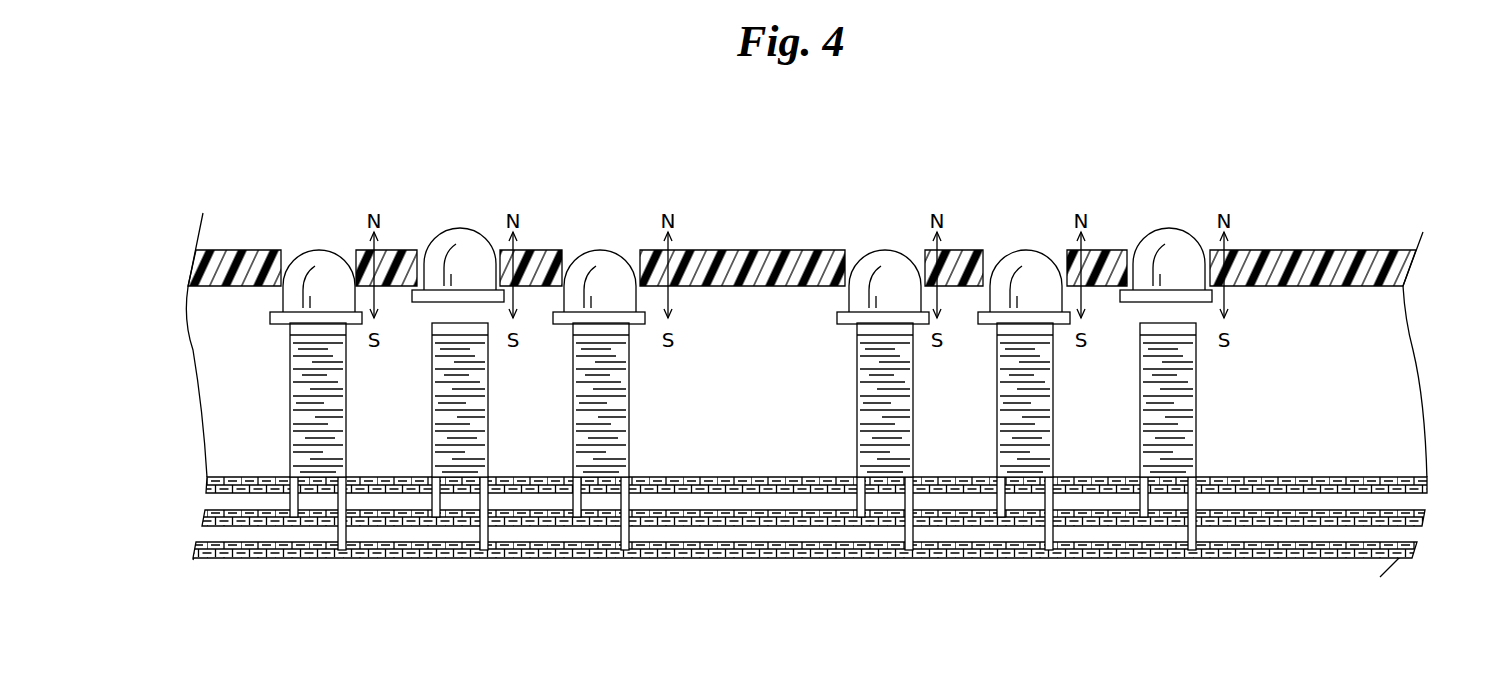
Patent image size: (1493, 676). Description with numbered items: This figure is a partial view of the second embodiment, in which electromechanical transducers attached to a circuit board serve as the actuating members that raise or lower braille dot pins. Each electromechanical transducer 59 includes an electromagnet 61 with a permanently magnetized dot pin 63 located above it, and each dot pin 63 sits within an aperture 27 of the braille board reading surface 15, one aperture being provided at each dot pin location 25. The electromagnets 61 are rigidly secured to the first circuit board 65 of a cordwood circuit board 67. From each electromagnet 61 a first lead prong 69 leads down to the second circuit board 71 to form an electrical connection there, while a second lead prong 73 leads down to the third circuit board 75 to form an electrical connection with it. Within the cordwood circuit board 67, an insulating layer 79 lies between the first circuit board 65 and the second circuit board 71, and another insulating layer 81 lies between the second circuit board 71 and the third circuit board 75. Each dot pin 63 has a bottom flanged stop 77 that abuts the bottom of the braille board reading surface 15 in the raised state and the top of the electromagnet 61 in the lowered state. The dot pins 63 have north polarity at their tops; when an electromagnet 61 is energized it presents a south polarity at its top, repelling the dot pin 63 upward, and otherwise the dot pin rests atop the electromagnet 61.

The braille board reading surface 15 is at (802, 248).
The dot pin location 25 is at (603, 232).
The aperture 27 is at (633, 250).
The electromechanical transducer 59 is at (628, 429).
The electromagnet 61 is at (572, 422).
The permanently magnetized dot pin 63 is at (625, 297).
The first circuit board 65 is at (1415, 487).
The cordwood circuit board 67 is at (794, 535).
The first lead prong 69 is at (588, 523).
The second circuit board 71 is at (1417, 512).
The second lead prong 73 is at (637, 535).
The third circuit board 75 is at (1400, 548).
The bottom flanged stop 77 is at (1212, 291).
The insulating layer 79 is at (1307, 502).
The insulating layer 81 is at (1100, 532).